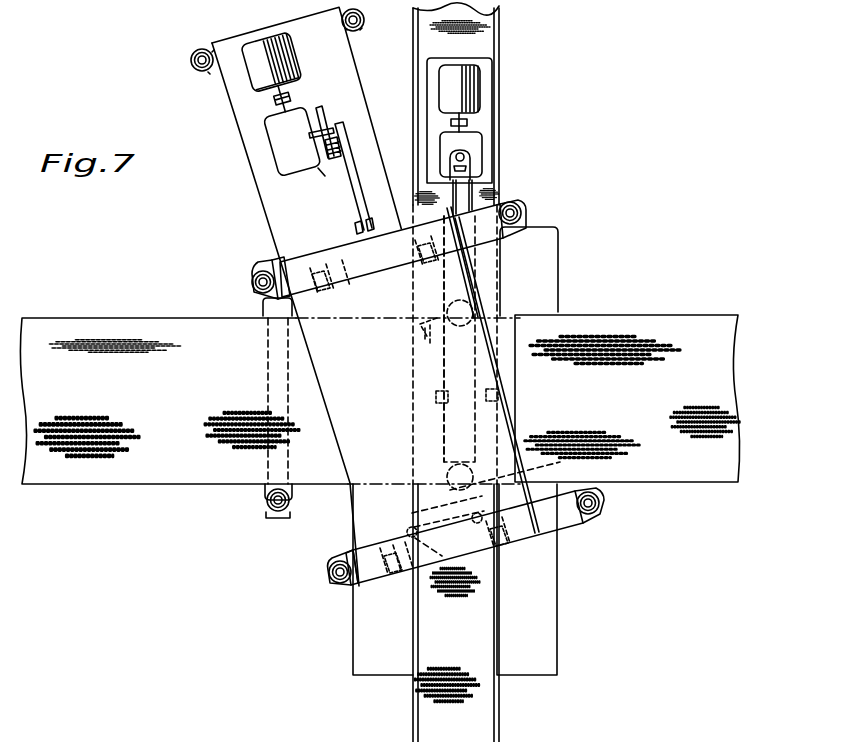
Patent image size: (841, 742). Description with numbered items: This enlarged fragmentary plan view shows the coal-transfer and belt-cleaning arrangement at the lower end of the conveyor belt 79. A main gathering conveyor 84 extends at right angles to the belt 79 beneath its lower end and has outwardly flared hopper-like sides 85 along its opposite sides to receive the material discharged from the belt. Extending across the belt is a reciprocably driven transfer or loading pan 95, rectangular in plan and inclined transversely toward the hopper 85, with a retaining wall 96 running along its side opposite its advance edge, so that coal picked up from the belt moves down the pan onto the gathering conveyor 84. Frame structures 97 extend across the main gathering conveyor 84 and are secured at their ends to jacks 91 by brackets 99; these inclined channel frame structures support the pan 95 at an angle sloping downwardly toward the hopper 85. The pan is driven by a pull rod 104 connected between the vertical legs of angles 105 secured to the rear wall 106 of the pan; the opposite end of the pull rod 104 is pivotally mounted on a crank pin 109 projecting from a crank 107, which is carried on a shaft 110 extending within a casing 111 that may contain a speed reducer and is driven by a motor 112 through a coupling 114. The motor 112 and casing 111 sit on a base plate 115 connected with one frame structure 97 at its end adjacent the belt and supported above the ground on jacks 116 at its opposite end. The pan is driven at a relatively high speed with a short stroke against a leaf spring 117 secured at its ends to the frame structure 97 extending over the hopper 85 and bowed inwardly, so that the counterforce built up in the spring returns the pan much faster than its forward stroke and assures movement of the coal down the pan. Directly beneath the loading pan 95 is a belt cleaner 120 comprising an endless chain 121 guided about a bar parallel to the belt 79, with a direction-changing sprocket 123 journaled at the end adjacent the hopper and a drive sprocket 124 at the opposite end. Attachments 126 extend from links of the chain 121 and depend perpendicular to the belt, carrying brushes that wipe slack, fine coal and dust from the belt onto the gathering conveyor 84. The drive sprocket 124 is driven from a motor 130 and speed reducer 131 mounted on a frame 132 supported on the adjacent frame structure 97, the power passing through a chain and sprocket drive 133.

The belt 79 is at (215, 485).
The main gathering conveyor 84 is at (490, 710).
The hopper-like sides 85 is at (377, 665).
The jacks 91 is at (252, 284).
The transfer pan 95 is at (345, 425).
The retaining wall 96 is at (510, 428).
The frame structures 97 is at (274, 262).
The brackets 99 is at (530, 202).
The pull rod 104 is at (358, 190).
The angles 105 is at (366, 224).
The rear wall 106 is at (312, 238).
The crank 107 is at (316, 170).
The crank pin 109 is at (334, 128).
The shaft 110 is at (318, 118).
The casing 111 is at (280, 162).
The motor 112 is at (282, 62).
The coupling 114 is at (270, 103).
The base plate 115 is at (250, 148).
The jacks 116 is at (206, 72).
The leaf spring 117 is at (496, 560).
The belt cleaner 120 is at (440, 425).
The endless chain 121 is at (440, 364).
The direction-changing sprocket 123 is at (446, 470).
The drive sprocket 124 is at (448, 312).
The attachments 126 is at (436, 398).
The motor 130 is at (484, 96).
The speed reducer 131 is at (475, 143).
The frame 132 is at (486, 170).
The chain and sprocket drive 133 is at (470, 184).